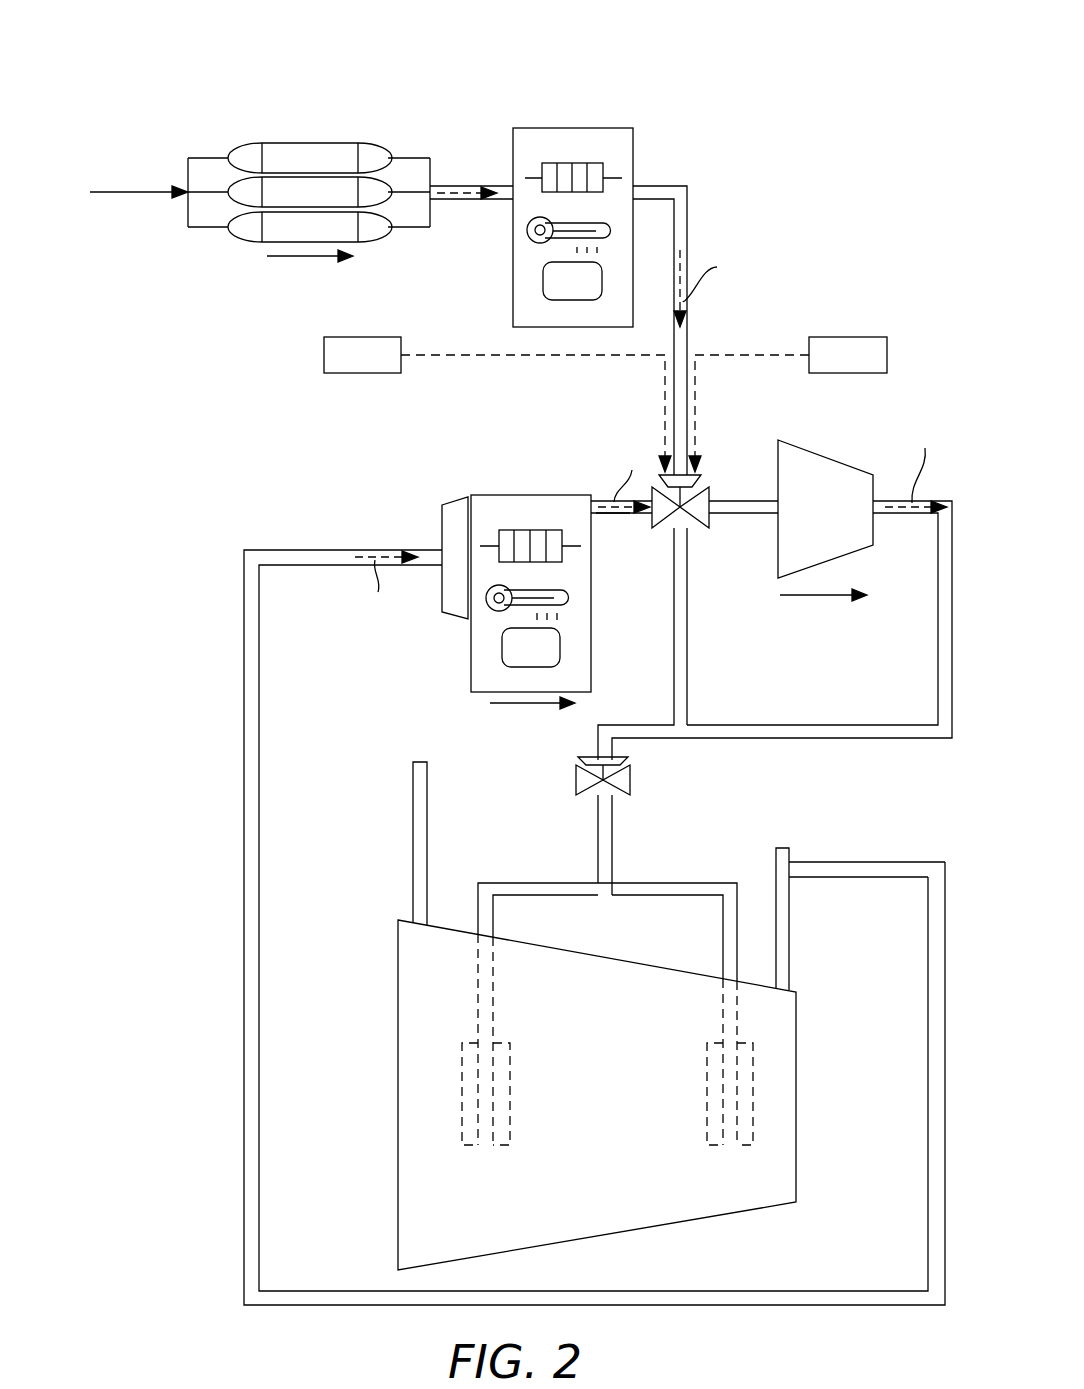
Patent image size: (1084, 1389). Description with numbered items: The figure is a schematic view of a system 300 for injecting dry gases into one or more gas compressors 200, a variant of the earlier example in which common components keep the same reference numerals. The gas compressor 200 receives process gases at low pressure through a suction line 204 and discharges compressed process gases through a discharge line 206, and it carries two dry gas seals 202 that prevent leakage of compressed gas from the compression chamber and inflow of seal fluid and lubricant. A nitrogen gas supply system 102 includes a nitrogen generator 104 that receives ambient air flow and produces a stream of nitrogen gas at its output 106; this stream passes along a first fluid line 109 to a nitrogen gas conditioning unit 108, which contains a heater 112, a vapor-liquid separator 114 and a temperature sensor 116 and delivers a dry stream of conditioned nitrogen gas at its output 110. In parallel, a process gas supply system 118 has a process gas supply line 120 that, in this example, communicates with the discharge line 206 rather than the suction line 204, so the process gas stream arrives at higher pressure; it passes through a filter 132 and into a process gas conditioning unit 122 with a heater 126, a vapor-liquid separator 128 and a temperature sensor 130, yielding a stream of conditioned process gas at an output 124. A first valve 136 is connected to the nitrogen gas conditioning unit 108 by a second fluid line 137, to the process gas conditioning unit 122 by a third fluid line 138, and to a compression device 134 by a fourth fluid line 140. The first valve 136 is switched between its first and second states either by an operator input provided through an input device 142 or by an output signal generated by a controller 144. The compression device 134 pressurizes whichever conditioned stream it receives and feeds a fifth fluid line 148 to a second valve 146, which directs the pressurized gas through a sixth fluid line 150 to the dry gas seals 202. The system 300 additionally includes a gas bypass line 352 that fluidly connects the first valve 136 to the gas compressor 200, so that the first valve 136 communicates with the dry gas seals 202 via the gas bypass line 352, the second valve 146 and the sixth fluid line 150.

The system 300 is at (792, 30).
The nitrogen gas supply system 102 is at (625, 65).
The nitrogen generator 104 is at (248, 158).
The output 106 is at (436, 185).
The first fluid line 109 is at (465, 190).
The nitrogen gas conditioning unit 108 is at (513, 315).
The heater 112 is at (552, 165).
The temperature sensor 116 is at (540, 240).
The vapor-liquid separator 114 is at (573, 278).
The output 110 is at (635, 184).
The second fluid line 137 is at (677, 387).
The controller 144 is at (497, 404).
The input device 142 is at (788, 398).
The first valve 136 is at (688, 483).
The fourth fluid line 140 is at (740, 500).
The compression device 134 is at (865, 520).
The fifth fluid line 148 is at (950, 650).
The gas bypass line 352 is at (682, 650).
The process gas supply system 118 is at (403, 472).
The process gas conditioning unit 122 is at (468, 683).
The filter 132 is at (448, 532).
The heater 126 is at (522, 530).
The temperature sensor 130 is at (496, 601).
The vapor-liquid separator 128 is at (530, 647).
The output 124 is at (600, 500).
The third fluid line 138 is at (604, 514).
The second valve 146 is at (612, 778).
The sixth fluid line 150 is at (613, 838).
The dry gas seals 202 is at (470, 1085).
The suction line 204 is at (420, 803).
The discharge line 206 is at (790, 935).
The gas compressor 200 is at (830, 1000).
The process gas supply line 120 is at (244, 738).